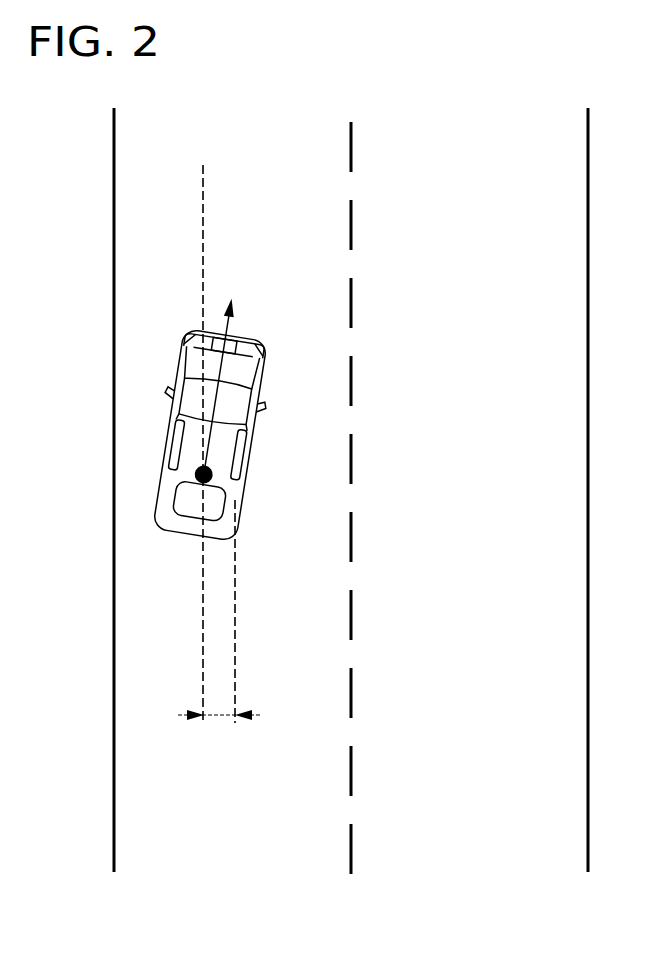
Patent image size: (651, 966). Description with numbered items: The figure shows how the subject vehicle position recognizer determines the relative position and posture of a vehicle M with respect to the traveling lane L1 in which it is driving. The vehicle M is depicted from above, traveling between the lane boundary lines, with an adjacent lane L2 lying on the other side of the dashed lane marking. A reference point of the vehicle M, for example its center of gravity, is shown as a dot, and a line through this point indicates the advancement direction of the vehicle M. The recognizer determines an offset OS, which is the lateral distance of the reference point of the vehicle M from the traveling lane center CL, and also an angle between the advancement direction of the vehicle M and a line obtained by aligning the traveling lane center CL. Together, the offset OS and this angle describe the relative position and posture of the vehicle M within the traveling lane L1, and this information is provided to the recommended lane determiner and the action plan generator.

The vehicle M is at (166, 452).
The traveling lane center CL is at (236, 612).
The offset OS is at (220, 738).
The traveling lane L1 is at (229, 840).
The second lane L2 is at (473, 840).